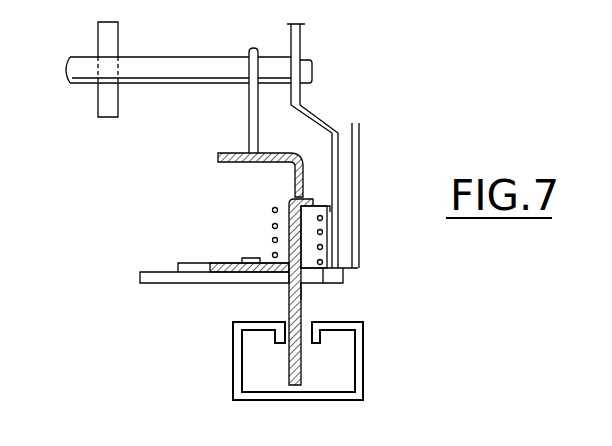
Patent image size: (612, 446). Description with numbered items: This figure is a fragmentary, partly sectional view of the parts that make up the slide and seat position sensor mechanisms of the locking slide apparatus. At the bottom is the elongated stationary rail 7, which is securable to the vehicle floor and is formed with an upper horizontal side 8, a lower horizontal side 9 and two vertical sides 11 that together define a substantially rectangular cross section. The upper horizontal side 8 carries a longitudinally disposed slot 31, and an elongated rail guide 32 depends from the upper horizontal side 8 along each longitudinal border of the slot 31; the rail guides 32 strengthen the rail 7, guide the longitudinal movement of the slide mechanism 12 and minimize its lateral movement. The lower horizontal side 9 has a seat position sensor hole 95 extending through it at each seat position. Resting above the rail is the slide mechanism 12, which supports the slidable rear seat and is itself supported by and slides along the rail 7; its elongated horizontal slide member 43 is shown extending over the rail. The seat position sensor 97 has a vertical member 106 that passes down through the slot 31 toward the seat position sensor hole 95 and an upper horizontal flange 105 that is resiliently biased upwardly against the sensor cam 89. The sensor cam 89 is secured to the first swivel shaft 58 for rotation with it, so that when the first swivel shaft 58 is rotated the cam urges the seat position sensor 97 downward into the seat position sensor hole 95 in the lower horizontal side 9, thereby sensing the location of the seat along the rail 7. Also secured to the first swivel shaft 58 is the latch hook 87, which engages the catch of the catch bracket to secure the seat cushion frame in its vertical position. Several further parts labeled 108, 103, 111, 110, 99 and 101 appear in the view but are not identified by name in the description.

The latch hook 87 is at (97, 33).
The first swivel shaft 58 is at (170, 58).
The sensor cam 89 is at (249, 111).
The upper horizontal flange 105 is at (227, 150).
The upright post 108 is at (300, 188).
The flange 111 is at (329, 215).
The vertical plate 103 is at (313, 197).
The seat position sensor 97 is at (301, 242).
The hole 110 is at (272, 208).
The hole 99 is at (272, 228).
The elongated horizontal slide member 43 is at (226, 271).
The slide mechanism 12 is at (176, 287).
The plate edge 101 is at (292, 285).
The vertical member 106 is at (302, 292).
The stationary rail 7 is at (233, 362).
The rail guide 32 is at (287, 328).
The slot 31 is at (308, 320).
The upper horizontal side 8 is at (240, 317).
The vertical sides 11 is at (233, 383).
The lower horizontal side 9 is at (311, 390).
The seat position sensor hole 95 is at (302, 397).